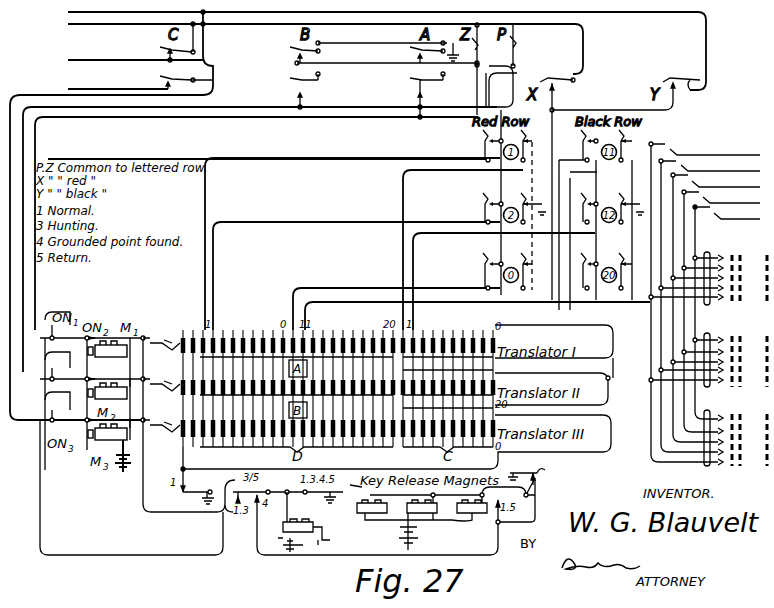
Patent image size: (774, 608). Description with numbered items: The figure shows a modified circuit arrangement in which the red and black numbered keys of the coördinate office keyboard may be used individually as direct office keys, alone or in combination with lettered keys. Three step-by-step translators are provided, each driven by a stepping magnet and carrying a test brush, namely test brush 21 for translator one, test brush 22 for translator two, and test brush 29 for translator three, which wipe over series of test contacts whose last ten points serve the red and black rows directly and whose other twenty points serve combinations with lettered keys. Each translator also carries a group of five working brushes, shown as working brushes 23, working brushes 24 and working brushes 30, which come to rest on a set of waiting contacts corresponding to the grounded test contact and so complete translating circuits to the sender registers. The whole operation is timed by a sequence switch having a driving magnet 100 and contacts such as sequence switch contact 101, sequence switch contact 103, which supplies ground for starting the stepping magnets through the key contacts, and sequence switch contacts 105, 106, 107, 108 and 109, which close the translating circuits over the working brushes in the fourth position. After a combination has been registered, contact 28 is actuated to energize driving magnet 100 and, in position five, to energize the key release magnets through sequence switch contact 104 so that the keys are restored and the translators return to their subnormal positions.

The test brush 21 is at (161, 335).
The test brush 22 is at (161, 377).
The test brush 29 is at (161, 417).
The working brushes 23 is at (712, 252).
The working brushes 24 is at (718, 326).
The working brushes 30 is at (712, 413).
The contact 28 is at (526, 469).
The driving magnet 100 is at (377, 523).
The sequence switch contact 101 is at (317, 501).
The sequence switch contact 103 is at (196, 488).
The sequence switch contact 104 is at (534, 478).
The sequence switch contact 105 is at (704, 301).
The sequence switch contact 106 is at (709, 304).
The sequence switch contact 107 is at (715, 307).
The sequence switch contact 108 is at (721, 310).
The sequence switch contact 109 is at (726, 312).